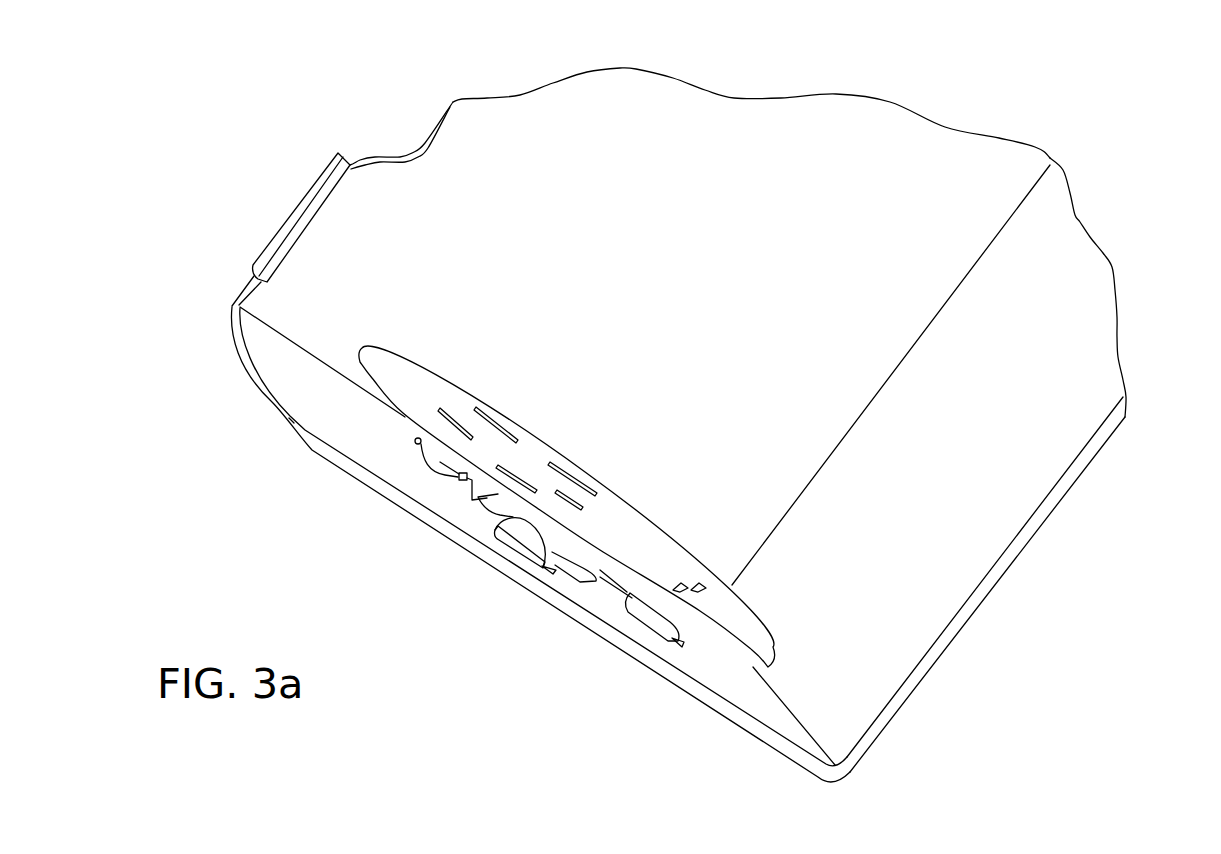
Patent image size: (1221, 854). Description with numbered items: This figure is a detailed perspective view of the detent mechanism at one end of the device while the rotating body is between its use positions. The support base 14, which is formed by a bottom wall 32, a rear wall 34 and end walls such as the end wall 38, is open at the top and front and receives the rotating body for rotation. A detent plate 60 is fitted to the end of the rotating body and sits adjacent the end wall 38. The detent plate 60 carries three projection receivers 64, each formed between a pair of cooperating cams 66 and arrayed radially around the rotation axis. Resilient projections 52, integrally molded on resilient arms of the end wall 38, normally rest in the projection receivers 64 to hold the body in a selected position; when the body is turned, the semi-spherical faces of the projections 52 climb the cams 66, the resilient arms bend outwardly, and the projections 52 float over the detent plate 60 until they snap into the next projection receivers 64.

The support base 14 is at (1080, 222).
The bottom wall 32 is at (843, 125).
The rear wall 34 is at (1060, 467).
The end wall 38 is at (665, 684).
The detent plate 60 is at (635, 547).
The cam 66 is at (433, 455).
The projection receiver 64 is at (470, 480).
The resilient projection 52 is at (523, 538).